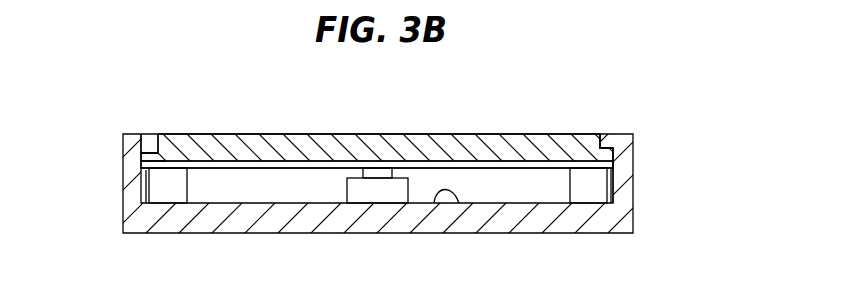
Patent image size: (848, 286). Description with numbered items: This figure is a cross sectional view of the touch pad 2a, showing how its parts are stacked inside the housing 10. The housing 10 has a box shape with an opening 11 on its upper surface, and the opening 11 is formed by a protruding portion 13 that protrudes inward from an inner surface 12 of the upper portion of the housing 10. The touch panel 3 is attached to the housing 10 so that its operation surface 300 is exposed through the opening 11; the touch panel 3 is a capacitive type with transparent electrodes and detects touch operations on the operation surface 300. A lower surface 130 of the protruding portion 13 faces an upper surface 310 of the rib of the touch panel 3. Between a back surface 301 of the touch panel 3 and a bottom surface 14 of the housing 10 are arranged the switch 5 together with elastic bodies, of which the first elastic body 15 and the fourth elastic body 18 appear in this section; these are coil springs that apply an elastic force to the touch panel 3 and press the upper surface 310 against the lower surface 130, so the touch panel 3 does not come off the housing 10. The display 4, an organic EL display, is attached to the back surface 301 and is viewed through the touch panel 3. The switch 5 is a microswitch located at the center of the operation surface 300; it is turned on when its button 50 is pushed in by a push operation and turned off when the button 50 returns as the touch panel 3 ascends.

The touch pad 2a is at (672, 92).
The touch panel 3 is at (540, 142).
The display 4 is at (620, 158).
The switch 5 is at (362, 183).
The housing 10 is at (624, 185).
The opening 11 is at (598, 140).
The inner surface 12 is at (606, 196).
The protruding portion 13 is at (152, 144).
The bottom surface 14 is at (452, 197).
The first elastic body 15 is at (585, 192).
The fourth elastic body 18 is at (168, 190).
The button 50 is at (372, 172).
The lower surface 130 is at (165, 162).
The operation surface 300 is at (501, 163).
The back surface 301 is at (502, 168).
The upper surface 310 is at (146, 150).